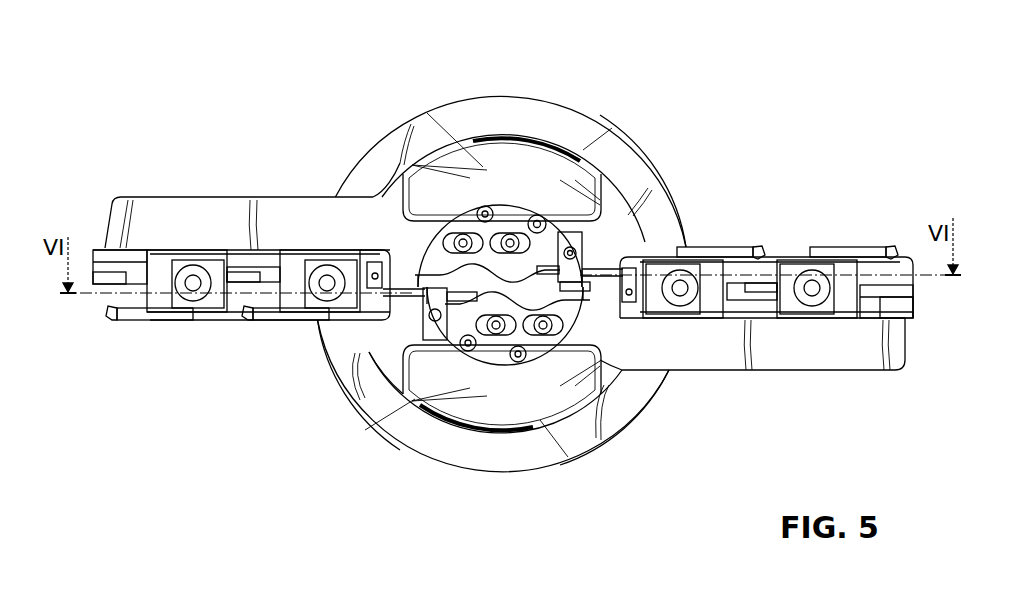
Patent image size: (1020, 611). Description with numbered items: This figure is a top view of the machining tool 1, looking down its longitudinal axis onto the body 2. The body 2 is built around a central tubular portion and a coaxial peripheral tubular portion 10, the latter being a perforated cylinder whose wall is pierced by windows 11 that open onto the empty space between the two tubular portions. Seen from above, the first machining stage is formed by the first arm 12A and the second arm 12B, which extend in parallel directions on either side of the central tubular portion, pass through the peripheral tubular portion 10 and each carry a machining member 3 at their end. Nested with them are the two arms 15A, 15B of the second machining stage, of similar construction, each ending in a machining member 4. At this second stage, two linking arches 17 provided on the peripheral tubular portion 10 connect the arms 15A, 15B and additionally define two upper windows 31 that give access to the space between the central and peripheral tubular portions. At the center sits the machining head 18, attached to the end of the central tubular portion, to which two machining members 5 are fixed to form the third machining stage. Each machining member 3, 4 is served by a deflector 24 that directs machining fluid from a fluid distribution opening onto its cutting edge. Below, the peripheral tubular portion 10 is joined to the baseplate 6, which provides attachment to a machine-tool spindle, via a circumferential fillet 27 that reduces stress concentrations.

The machining tool 1 is at (697, 134).
The body 2 is at (672, 225).
The machining member 3 is at (105, 258).
The machining member 4 is at (243, 273).
The machining member 5 is at (413, 280).
The baseplate 6 is at (530, 113).
The peripheral tubular portion 10 is at (620, 383).
The window 11 is at (452, 127).
The first arm 12A is at (837, 357).
The second arm 12B is at (143, 210).
The arm 15A is at (690, 357).
The arm 15B is at (287, 210).
The linking arch 17 is at (489, 145).
The machining head 18 is at (507, 217).
The deflector 24 is at (280, 320).
The circumferential fillet 27 is at (337, 353).
The upper window 31 is at (517, 163).